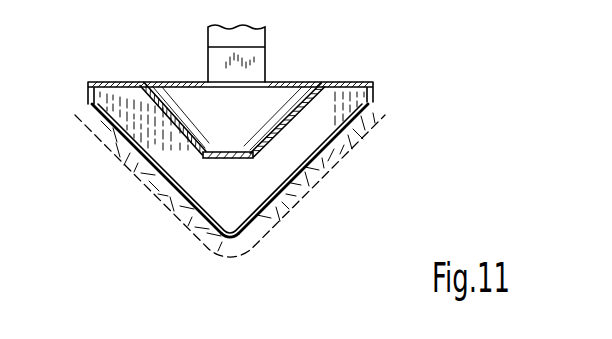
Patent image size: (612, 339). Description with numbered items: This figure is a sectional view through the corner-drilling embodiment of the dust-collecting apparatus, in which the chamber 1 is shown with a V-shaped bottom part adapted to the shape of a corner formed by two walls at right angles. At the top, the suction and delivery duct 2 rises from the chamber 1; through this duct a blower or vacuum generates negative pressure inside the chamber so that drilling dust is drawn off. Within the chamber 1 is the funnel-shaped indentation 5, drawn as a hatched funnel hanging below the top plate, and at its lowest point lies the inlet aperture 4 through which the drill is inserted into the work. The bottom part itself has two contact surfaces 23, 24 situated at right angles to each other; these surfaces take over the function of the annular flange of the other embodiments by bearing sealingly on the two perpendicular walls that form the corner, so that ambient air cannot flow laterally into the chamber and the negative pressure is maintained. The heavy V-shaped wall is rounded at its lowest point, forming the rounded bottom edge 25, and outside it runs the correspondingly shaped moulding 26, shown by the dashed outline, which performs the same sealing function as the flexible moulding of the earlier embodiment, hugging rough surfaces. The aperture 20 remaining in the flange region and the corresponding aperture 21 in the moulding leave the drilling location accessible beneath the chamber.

The chamber 1 is at (328, 118).
The suction and delivery duct 2 is at (257, 76).
The inlet aperture 4 is at (237, 151).
The funnel-shaped indentation 5 is at (172, 117).
The aperture 20 is at (296, 193).
The aperture 21 is at (263, 227).
The contact surface 23 is at (138, 170).
The contact surface 24 is at (334, 143).
The rounded bottom edge 25 is at (230, 241).
The moulding 26 is at (318, 178).